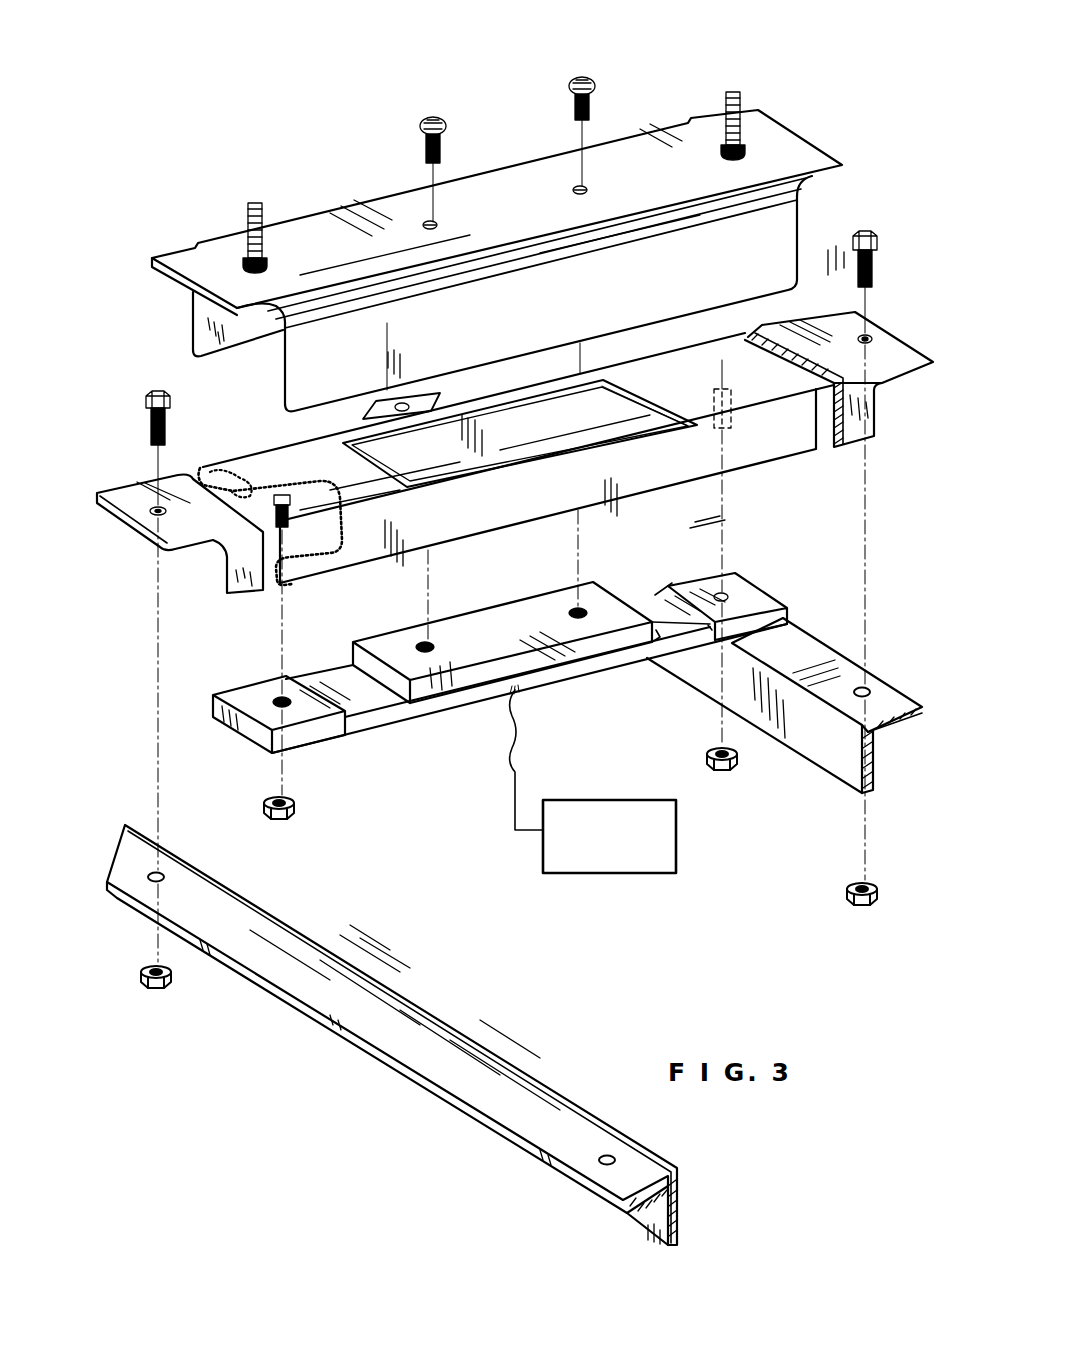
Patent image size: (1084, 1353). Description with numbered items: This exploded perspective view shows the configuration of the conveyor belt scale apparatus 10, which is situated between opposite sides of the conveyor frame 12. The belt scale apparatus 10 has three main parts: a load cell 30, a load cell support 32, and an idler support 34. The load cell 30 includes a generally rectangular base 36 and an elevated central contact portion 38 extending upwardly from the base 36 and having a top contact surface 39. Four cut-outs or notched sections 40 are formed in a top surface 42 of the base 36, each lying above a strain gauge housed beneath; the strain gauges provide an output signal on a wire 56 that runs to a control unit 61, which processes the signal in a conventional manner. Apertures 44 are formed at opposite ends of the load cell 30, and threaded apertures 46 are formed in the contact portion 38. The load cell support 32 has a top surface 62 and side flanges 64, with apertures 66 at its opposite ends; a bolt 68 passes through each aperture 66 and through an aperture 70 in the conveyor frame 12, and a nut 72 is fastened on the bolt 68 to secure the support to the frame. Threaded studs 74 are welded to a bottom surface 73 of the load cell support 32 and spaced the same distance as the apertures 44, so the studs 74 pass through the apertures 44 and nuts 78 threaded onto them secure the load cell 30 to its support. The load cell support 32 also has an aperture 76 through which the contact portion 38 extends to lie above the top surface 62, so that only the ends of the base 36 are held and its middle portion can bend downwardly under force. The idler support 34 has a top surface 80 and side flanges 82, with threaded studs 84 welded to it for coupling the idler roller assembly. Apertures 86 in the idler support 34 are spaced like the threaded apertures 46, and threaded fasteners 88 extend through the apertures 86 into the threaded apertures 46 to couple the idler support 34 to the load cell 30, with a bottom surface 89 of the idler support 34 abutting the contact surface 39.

The belt scale apparatus 10 is at (459, 811).
The conveyor frame 12 is at (516, 931).
The load cell 30 is at (514, 672).
The load cell support 32 is at (202, 560).
The idler support 34 is at (481, 232).
The base 36 is at (682, 635).
The contact portion 38 is at (502, 629).
The top contact surface 39 is at (513, 624).
The notched sections 40 is at (347, 717).
The top surface 42 is at (764, 604).
The apertures 44 is at (272, 700).
The threaded apertures 46 is at (425, 645).
The wire 56 is at (522, 740).
The control unit 61 is at (614, 877).
The top surface 62 is at (516, 459).
The side flanges 64 is at (840, 425).
The apertures 66 is at (153, 515).
The bolt 68 is at (150, 418).
The aperture 70 is at (868, 690).
The nut 72 is at (156, 990).
The bottom surface 73 is at (237, 493).
The threaded studs 74 is at (313, 500).
The aperture 76 is at (523, 440).
The nuts 78 is at (282, 820).
The top surface 80 is at (643, 137).
The side flanges 82 is at (240, 340).
The threaded studs 84 is at (255, 203).
The apertures 86 is at (440, 226).
The threaded fasteners 88 is at (433, 117).
The bottom surface 89 is at (165, 283).